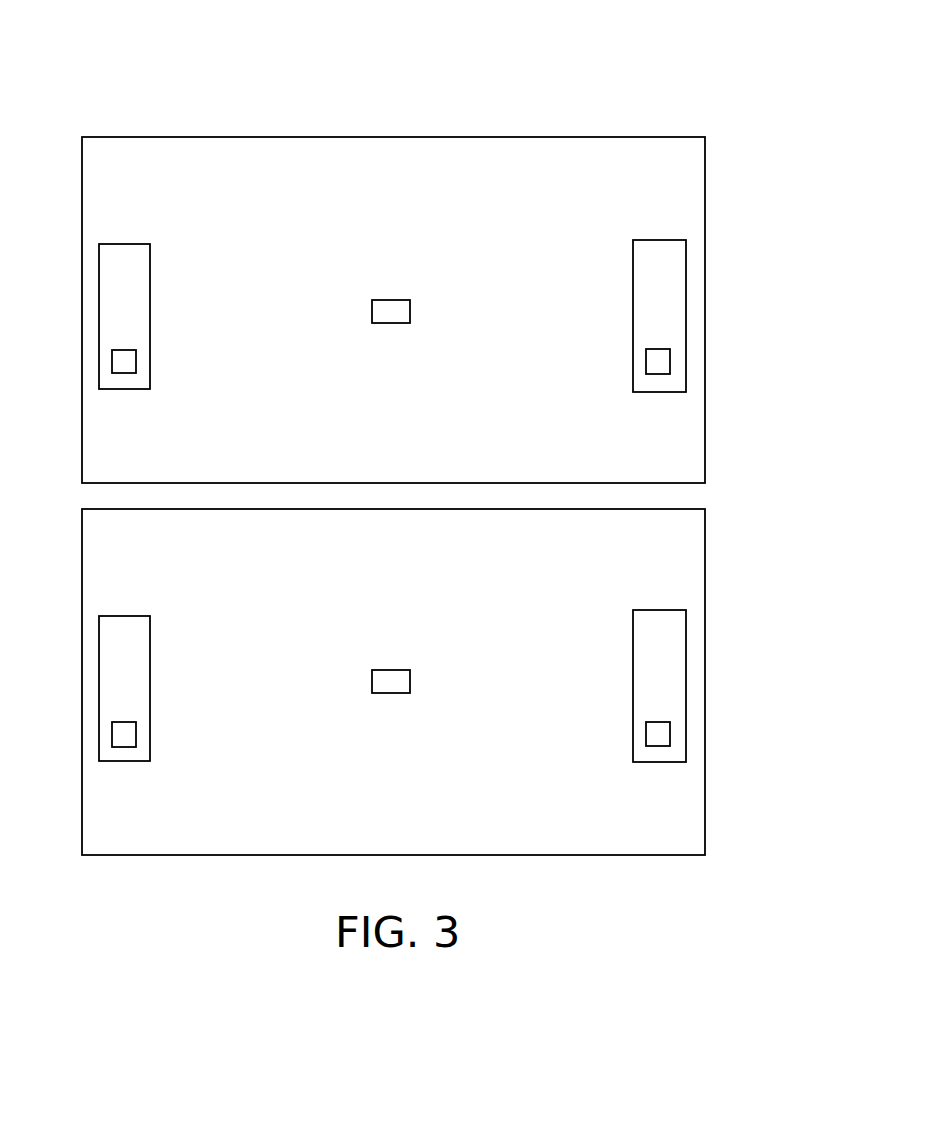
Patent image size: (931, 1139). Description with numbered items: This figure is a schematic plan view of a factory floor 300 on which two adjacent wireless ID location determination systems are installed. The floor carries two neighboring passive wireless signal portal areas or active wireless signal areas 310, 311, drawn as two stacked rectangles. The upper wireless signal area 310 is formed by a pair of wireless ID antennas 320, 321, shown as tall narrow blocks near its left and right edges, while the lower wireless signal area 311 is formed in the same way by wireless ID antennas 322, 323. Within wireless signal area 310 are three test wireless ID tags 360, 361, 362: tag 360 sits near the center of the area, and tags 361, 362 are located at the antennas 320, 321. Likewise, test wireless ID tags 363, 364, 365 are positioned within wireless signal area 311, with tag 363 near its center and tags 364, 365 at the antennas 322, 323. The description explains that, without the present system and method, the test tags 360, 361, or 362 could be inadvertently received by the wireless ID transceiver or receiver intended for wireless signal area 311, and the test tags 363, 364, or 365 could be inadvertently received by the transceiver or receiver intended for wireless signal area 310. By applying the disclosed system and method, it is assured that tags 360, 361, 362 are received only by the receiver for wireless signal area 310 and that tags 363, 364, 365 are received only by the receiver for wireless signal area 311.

The factory floor 300 is at (398, 123).
The wireless signal area 310 is at (705, 158).
The wireless signal area 311 is at (705, 521).
The wireless ID antenna 320 is at (150, 302).
The wireless ID antenna 321 is at (633, 300).
The wireless ID antenna 322 is at (150, 671).
The wireless ID antenna 323 is at (633, 670).
The test wireless ID tag 360 is at (392, 300).
The test wireless ID tag 361 is at (136, 361).
The test wireless ID tag 362 is at (646, 359).
The test wireless ID tag 363 is at (392, 670).
The test wireless ID tag 364 is at (136, 733).
The test wireless ID tag 365 is at (646, 732).